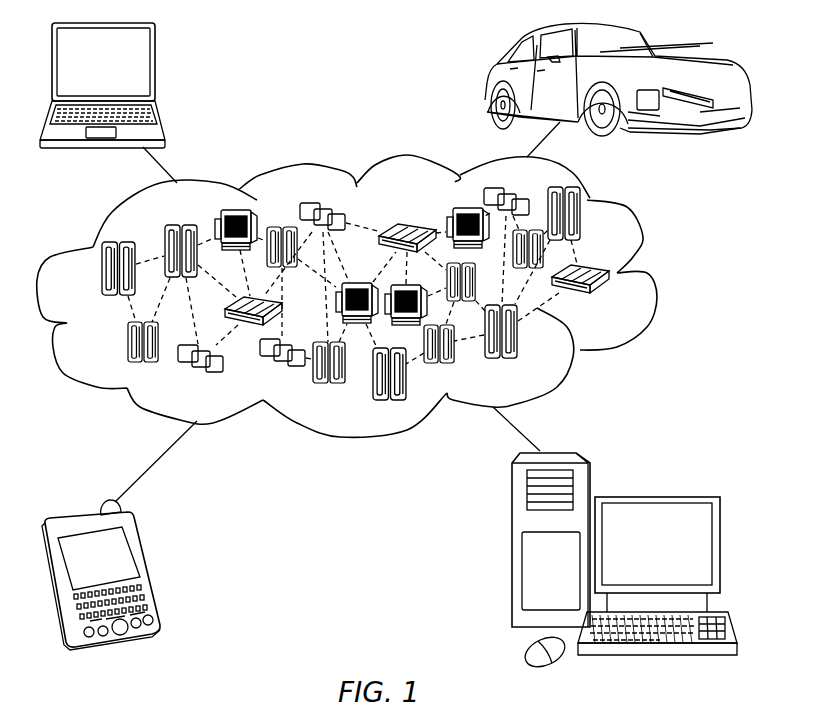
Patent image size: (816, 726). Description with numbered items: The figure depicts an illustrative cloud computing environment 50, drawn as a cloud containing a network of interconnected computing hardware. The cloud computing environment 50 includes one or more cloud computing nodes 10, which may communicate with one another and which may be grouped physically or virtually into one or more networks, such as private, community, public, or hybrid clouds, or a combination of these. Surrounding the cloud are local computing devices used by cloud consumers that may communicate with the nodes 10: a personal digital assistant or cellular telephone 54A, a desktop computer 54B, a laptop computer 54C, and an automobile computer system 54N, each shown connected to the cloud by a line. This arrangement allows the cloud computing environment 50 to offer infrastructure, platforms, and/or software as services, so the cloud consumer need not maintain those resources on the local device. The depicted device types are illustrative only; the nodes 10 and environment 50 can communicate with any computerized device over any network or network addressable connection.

The cloud computing node 10 is at (620, 301).
The cloud computing environment 50 is at (368, 296).
The personal digital assistant or cellular telephone 54A is at (151, 563).
The desktop computer 54B is at (652, 497).
The laptop computer 54C is at (157, 68).
The automobile computer system 54N is at (483, 80).